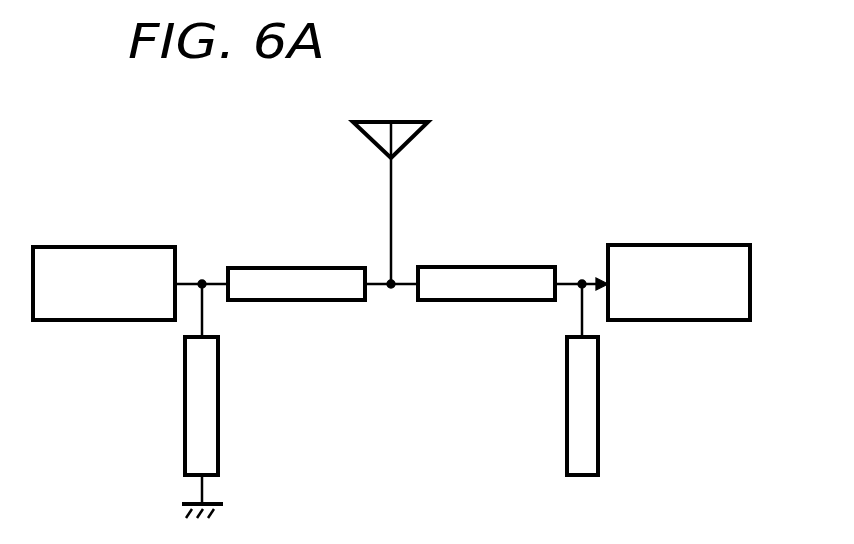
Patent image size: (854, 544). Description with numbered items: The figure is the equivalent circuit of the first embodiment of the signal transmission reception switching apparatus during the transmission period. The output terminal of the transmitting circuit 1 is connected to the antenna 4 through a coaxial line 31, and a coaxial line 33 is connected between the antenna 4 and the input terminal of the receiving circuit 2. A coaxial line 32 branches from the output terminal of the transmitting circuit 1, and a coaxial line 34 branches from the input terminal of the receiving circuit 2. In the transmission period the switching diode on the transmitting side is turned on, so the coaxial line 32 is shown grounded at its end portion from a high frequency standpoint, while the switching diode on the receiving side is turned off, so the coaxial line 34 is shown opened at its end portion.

The transmitting circuit 1 is at (97, 320).
The receiving circuit 2 is at (712, 320).
The antenna 4 is at (391, 188).
The coaxial line 31 is at (301, 300).
The coaxial line 32 is at (218, 418).
The coaxial line 33 is at (497, 300).
The coaxial line 34 is at (598, 424).